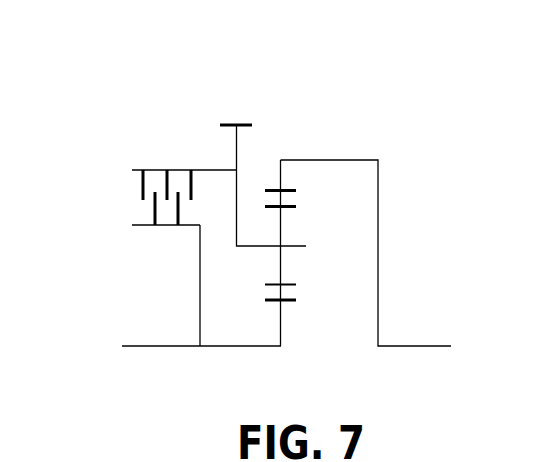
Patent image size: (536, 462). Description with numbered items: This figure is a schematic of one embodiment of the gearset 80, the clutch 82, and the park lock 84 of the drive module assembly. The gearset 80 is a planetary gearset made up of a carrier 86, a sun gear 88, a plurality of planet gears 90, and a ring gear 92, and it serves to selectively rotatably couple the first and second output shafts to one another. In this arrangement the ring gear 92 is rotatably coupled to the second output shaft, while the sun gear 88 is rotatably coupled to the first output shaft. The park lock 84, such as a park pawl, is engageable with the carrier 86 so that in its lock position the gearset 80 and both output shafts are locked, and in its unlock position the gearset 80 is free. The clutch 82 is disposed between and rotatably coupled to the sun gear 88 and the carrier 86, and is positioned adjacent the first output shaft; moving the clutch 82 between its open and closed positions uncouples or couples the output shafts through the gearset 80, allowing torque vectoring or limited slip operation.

The gearset 80 is at (104, 145).
The clutch 82 is at (143, 182).
The park lock 84 is at (241, 97).
The carrier 86 is at (238, 146).
The sun gear 88 is at (142, 346).
The plurality of planet gears 90 is at (281, 236).
The ring gear 92 is at (378, 239).